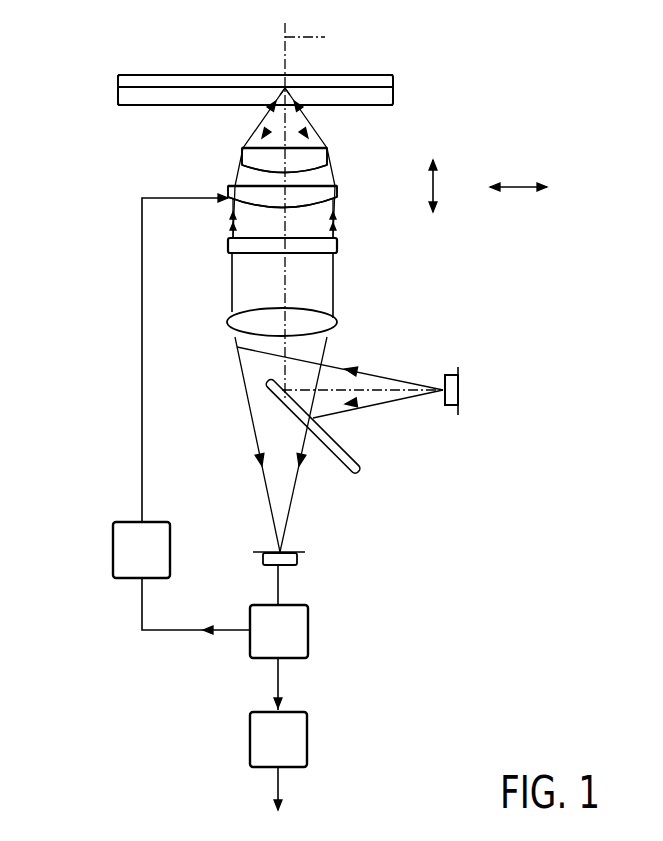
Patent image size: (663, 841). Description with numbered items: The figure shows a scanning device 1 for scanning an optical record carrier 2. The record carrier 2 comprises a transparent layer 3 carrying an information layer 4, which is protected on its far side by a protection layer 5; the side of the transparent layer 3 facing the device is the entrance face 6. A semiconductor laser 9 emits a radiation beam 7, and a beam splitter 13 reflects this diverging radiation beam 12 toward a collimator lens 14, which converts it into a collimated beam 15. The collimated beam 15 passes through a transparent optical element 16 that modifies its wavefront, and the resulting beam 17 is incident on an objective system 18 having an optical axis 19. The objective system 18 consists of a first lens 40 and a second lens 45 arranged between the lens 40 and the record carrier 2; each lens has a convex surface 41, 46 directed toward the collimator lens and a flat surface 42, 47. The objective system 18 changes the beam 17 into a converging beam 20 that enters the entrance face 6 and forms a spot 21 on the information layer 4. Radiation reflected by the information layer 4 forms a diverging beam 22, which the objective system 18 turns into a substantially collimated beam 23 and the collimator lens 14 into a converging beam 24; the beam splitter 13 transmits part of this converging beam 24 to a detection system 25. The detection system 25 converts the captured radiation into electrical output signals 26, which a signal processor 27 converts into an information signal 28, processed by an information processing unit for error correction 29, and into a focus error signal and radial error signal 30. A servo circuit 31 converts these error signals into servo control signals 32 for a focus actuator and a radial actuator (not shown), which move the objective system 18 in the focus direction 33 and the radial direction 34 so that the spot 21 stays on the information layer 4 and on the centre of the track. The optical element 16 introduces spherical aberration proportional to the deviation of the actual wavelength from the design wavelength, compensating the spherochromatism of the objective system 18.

The scanning device 1 is at (58, 354).
The optical record carrier 2 is at (73, 18).
The transparent layer 3 is at (128, 97).
The information layer 4 is at (147, 85).
The protection layer 5 is at (200, 82).
The entrance face 6 is at (157, 106).
The radiation beam 7 is at (398, 377).
The semiconductor laser 9 is at (462, 398).
The diverging radiation beam 12 is at (328, 420).
The beam splitter 13 is at (223, 343).
The collimator lens 14 is at (230, 323).
The collimated beam 15 is at (232, 282).
The transparent optical element 16 is at (228, 248).
The beam 17 is at (232, 216).
The objective system 18 is at (222, 140).
The optical axis 19 is at (317, 211).
The converging beam 20 is at (265, 126).
The spot 21 is at (283, 86).
The diverging beam 22 is at (305, 126).
The substantially collimated beam 23 is at (336, 224).
The converging beam 24 is at (330, 350).
The detection system 25 is at (305, 558).
The electrical output signals 26 is at (281, 585).
The signal processor 27 is at (308, 632).
The information signal 28 is at (280, 680).
The information processing unit for error correction 29 is at (307, 739).
The focus error signal and radial error signal 30 is at (187, 633).
The servo circuit 31 is at (113, 550).
The servo control signals 32 is at (143, 392).
The focus direction 33 is at (433, 185).
The radial direction 34 is at (517, 187).
The first lens 40 is at (338, 196).
The lens surface 41 is at (336, 208).
The surface 42 is at (337, 186).
The second lens 45 is at (328, 155).
The lens surface 46 is at (320, 172).
The surface 47 is at (327, 148).